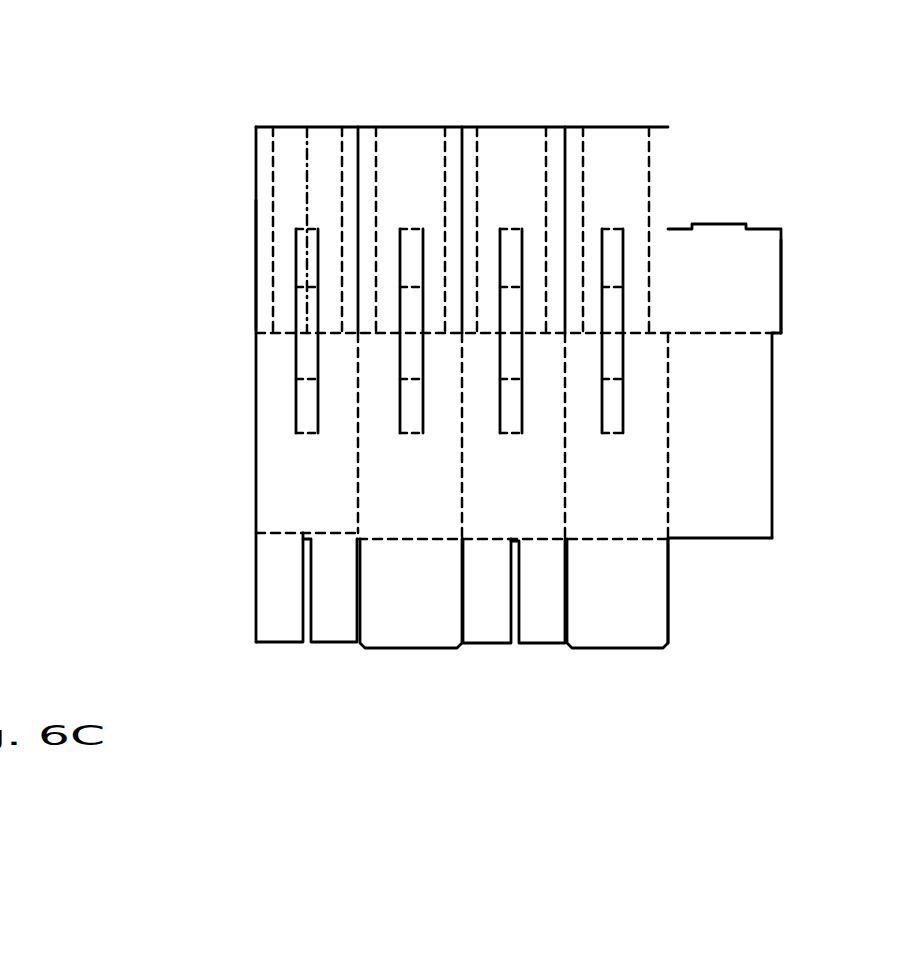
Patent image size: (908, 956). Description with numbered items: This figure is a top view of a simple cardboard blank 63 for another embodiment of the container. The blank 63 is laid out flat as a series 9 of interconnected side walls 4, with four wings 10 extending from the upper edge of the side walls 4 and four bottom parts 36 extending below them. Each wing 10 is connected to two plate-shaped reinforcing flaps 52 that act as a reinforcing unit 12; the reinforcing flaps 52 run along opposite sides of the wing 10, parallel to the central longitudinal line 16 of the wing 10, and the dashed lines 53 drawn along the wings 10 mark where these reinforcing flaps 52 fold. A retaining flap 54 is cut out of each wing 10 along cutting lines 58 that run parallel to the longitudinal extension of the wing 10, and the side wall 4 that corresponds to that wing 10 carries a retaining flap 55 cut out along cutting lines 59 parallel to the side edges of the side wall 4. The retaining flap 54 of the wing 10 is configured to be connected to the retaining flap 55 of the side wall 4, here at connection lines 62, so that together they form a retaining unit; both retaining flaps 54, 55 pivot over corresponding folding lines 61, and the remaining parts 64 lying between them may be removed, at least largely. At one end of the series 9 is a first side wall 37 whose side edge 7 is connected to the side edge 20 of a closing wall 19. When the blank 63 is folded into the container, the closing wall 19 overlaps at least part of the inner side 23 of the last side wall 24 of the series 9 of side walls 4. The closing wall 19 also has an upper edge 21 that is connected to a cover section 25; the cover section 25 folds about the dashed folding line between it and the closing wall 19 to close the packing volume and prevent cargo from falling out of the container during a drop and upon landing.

The side wall 4 is at (291, 497).
The side edge of first side wall 7 is at (672, 493).
The series of interconnected side walls 9 is at (223, 477).
The wing 10 is at (288, 147).
The reinforcing unit 12 is at (252, 266).
The central longitudinal line of the wing 16 is at (303, 163).
The closing wall 19 is at (725, 458).
The side edge of closing wall 20 is at (672, 388).
The upper edge of closing wall 21 is at (737, 330).
The inner side of last side wall 23 is at (347, 526).
The last side wall 24 is at (268, 443).
The cover section 25 is at (769, 305).
The bottom part 36 is at (277, 620).
The first side wall 37 is at (643, 460).
The reinforcing flap 52 is at (348, 177).
The fold line 53 is at (653, 173).
The retaining flap of the wing 54 is at (305, 284).
The retaining flap of the side wall 55 is at (305, 421).
The cutting line 58 is at (604, 278).
The cutting line 59 is at (604, 389).
The folding line 61 is at (312, 228).
The connection line 62 is at (408, 290).
The blank 63 is at (176, 333).
The remaining part 64 is at (305, 370).